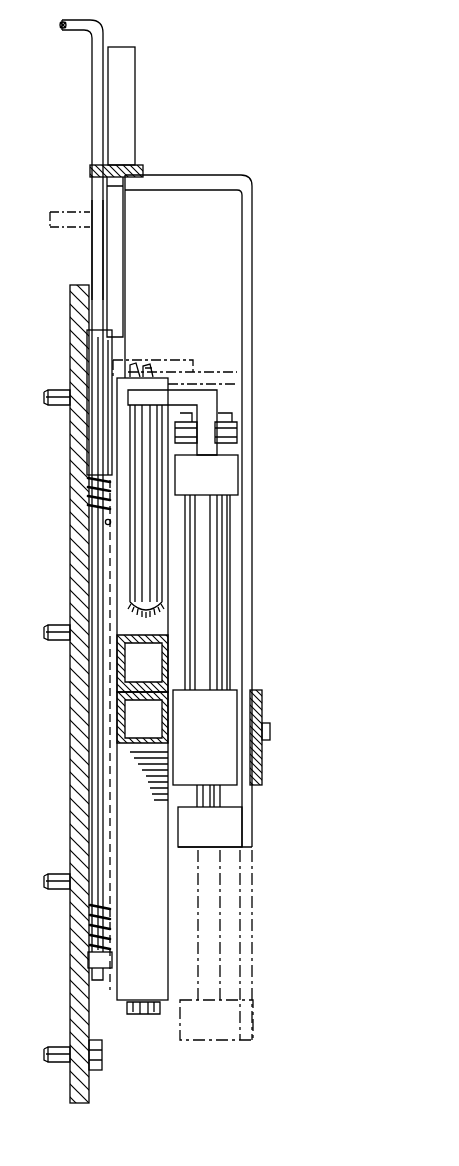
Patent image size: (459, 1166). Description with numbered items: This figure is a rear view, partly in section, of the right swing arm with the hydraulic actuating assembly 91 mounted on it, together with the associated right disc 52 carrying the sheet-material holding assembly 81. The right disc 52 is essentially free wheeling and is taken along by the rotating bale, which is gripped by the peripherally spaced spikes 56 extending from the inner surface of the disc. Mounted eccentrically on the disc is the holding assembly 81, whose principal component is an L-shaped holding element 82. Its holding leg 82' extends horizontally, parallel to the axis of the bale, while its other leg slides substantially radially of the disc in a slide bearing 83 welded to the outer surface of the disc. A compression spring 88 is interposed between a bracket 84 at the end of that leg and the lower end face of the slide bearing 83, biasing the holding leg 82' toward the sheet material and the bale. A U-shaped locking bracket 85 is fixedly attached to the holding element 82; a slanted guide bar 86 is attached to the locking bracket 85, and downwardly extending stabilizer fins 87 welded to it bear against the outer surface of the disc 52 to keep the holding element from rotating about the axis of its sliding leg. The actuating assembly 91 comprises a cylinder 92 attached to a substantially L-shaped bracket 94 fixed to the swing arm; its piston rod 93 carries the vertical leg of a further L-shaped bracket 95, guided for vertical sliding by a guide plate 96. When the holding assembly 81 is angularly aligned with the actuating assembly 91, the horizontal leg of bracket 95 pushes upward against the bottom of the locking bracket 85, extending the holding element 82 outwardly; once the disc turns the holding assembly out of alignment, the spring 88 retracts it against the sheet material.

The right disc 52 is at (78, 817).
The peripherally spaced spikes 56 is at (57, 877).
The sheet-material holding assembly 81 is at (97, 525).
The L-shaped holding element 82 is at (107, 477).
The holding leg 82' is at (64, 47).
The slide bearing 83 is at (112, 342).
The bracket 84 is at (98, 958).
The U-shaped locking bracket 85 is at (141, 167).
The slanted guide bar 86 is at (132, 78).
The stabilizer fins 87 is at (121, 243).
The compression spring 88 is at (90, 934).
The hydraulic actuating assembly 91 is at (236, 541).
The cylinder 92 is at (217, 590).
The piston rod 93 is at (220, 795).
The L-shaped bracket 94 is at (178, 392).
The L-shaped bracket 95 is at (247, 315).
The guide plate 96 is at (262, 695).